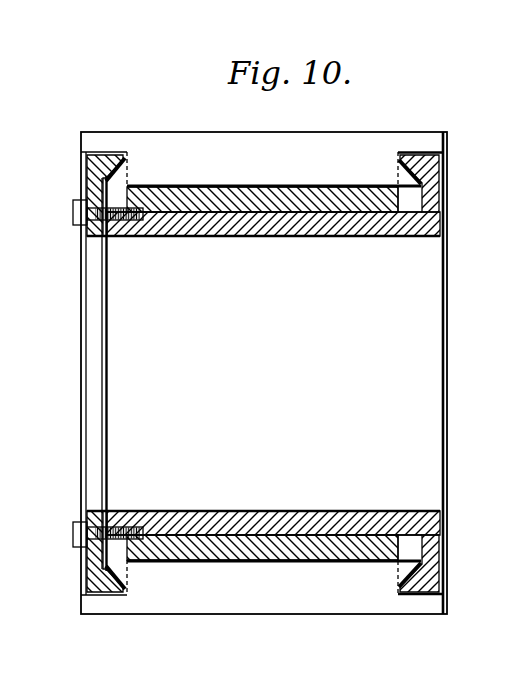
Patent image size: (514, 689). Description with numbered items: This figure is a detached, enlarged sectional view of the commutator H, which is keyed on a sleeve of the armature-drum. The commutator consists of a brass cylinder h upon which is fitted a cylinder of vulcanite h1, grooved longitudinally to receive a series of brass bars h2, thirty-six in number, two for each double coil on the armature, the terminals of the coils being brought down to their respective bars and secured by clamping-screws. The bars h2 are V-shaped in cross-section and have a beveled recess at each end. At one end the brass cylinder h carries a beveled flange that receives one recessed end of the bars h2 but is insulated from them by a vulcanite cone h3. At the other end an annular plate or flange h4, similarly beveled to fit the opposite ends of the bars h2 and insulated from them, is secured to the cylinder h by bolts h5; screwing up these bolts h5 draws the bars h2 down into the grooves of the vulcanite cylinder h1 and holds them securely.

The commutator H is at (264, 378).
The brass cylinder h is at (206, 238).
The vulcanite cylinder h1 is at (262, 210).
The brass bars h2 is at (262, 378).
The vulcanite cone h3 is at (458, 577).
The annular plate or flange h4 is at (100, 515).
The bolts h5 is at (73, 538).